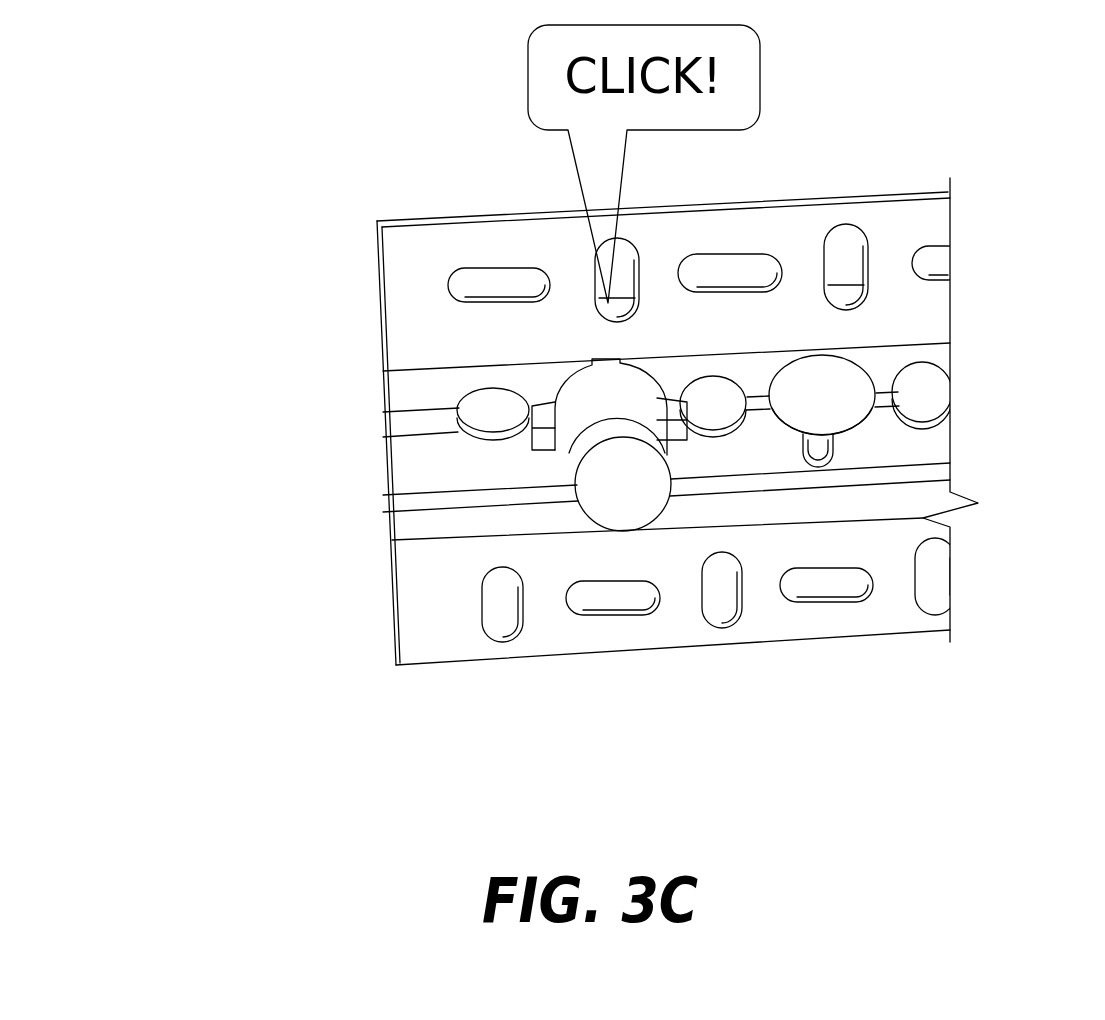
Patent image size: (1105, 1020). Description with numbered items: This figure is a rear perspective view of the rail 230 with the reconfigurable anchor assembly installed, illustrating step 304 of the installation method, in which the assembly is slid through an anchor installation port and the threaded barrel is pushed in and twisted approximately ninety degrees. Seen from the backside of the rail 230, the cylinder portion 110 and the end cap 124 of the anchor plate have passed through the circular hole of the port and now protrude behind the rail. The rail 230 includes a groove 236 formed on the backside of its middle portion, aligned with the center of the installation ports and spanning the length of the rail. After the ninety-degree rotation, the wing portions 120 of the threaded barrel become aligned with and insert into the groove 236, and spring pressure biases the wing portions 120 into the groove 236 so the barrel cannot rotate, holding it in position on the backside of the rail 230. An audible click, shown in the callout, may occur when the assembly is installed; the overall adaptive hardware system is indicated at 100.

The mounting device 100 is at (320, 512).
The cylinder portion 110 is at (615, 393).
The wing portions 120 is at (683, 430).
The end cap 124 is at (640, 493).
The rail 230 is at (350, 172).
The groove 236 is at (410, 425).
The step 304 is at (200, 395).